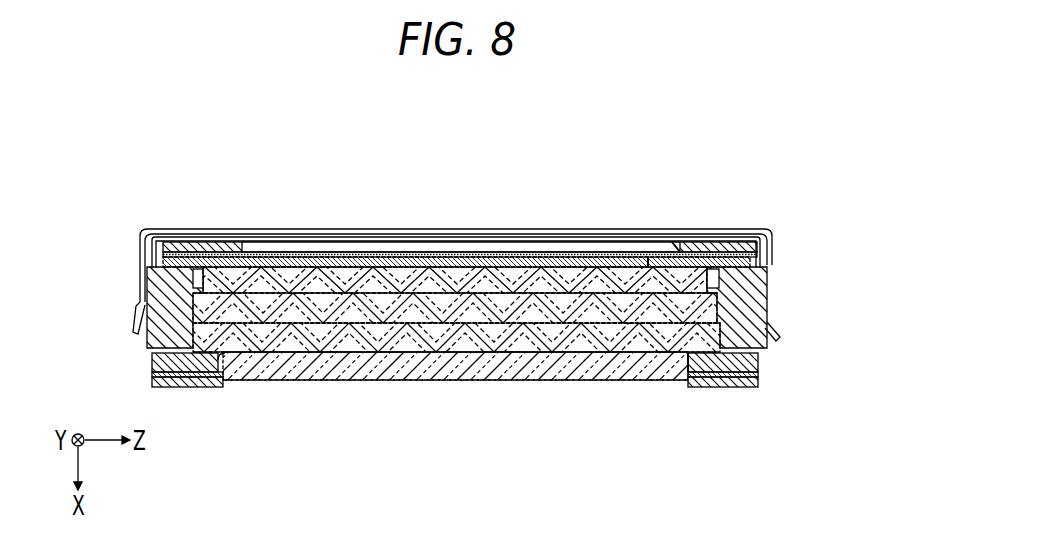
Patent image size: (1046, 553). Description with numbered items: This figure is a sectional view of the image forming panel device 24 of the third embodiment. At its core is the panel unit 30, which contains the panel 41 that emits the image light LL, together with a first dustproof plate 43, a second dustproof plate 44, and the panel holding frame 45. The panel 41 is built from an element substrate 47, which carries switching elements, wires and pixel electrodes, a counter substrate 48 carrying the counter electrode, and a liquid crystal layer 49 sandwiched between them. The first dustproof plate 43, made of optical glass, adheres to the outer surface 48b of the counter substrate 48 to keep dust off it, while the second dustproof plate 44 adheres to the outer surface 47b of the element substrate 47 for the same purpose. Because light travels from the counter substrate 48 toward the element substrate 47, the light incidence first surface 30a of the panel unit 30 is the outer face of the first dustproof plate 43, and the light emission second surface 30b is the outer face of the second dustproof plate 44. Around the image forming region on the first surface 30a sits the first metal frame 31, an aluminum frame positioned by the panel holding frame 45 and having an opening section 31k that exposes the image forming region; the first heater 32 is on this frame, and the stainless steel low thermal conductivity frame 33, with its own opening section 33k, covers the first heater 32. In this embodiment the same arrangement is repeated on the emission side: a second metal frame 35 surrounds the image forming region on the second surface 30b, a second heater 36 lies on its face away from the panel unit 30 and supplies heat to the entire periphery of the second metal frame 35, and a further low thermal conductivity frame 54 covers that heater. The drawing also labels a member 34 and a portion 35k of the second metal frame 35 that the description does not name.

The image forming panel device 24 is at (423, 163).
The image light LL is at (455, 205).
The panel unit 30 is at (337, 247).
The first surface 30a is at (539, 266).
The second surface 30b is at (494, 381).
The first metal frame 31 is at (752, 262).
The opening section 31k is at (648, 253).
The first heater 32 is at (756, 252).
The low thermal conductivity frame 33 is at (748, 240).
The opening section 33k is at (672, 240).
The cover 34 is at (190, 228).
The second metal frame 35 is at (758, 358).
The end of support member 35k is at (688, 354).
The second heater 36 is at (760, 376).
The panel 41 is at (449, 386).
The first dustproof plate 43 is at (391, 275).
The second dustproof plate 44 is at (590, 365).
The panel holding frame 45 is at (754, 320).
The element substrate 47 is at (417, 340).
The outer surface of the element substrate 47b is at (272, 355).
The counter substrate 48 is at (330, 308).
The outer surface of the counter substrate 48b is at (265, 292).
The liquid crystal layer 49 is at (368, 323).
The low thermal conductivity frame 54 is at (760, 384).